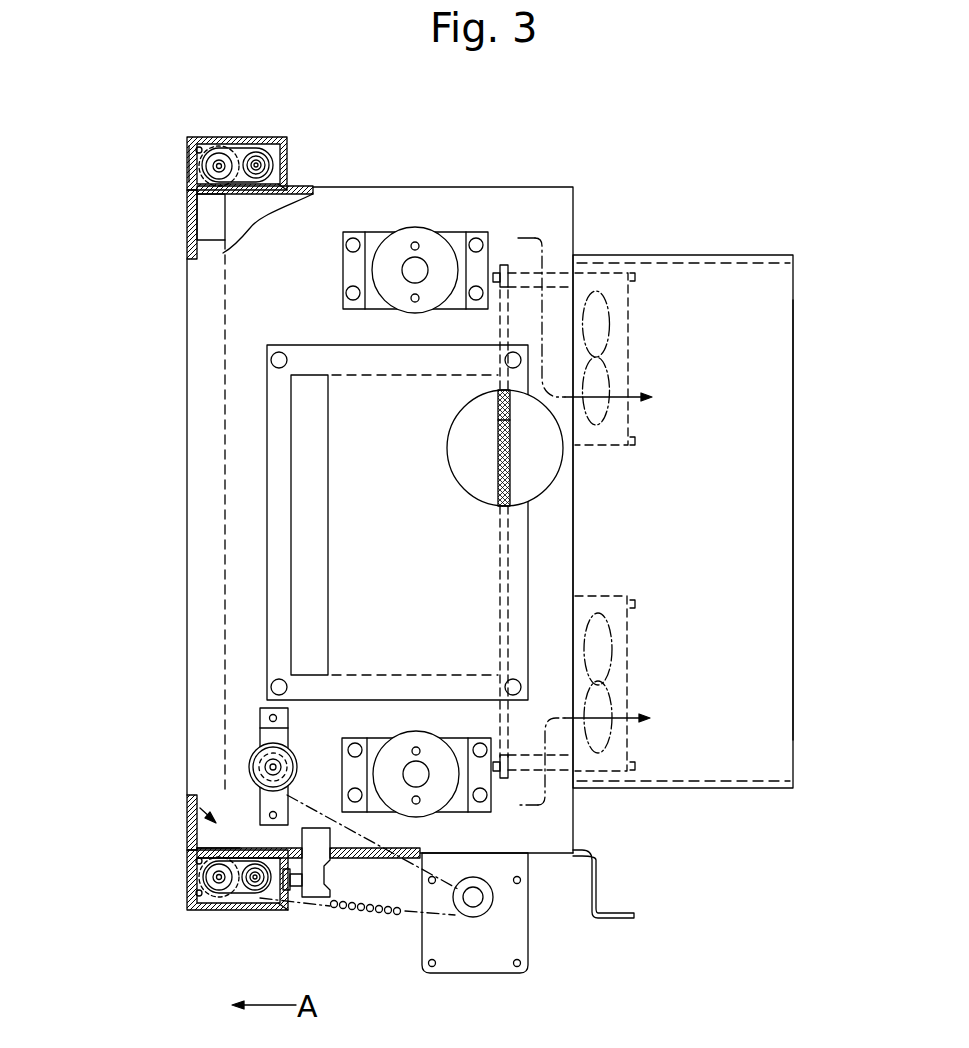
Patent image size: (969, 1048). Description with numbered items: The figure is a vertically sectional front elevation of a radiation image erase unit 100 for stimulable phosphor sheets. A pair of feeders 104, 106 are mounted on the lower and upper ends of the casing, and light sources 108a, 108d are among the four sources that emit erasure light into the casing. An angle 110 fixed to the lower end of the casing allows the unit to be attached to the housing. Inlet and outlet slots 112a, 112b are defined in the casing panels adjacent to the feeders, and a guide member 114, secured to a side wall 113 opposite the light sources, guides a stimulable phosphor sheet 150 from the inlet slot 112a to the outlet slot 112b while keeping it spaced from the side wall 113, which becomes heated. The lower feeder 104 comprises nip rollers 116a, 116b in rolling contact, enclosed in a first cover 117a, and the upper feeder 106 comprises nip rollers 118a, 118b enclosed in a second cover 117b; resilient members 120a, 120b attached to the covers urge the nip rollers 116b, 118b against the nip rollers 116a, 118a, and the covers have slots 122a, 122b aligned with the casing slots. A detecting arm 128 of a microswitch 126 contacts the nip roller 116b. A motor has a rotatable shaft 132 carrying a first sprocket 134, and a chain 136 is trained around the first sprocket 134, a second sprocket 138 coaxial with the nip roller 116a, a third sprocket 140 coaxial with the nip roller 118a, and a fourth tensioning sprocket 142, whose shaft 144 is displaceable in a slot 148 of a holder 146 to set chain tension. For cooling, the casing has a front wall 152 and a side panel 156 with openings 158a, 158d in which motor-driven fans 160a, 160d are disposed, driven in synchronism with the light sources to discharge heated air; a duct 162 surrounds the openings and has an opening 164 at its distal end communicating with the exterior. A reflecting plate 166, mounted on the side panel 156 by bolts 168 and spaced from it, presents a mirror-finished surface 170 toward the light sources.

The radiation image erase unit 100 is at (575, 430).
The feeder 104 is at (182, 892).
The feeder 106 is at (262, 138).
The light source 108a is at (445, 232).
The light source 108d is at (442, 820).
The angle 110 is at (617, 916).
The inlet slot 112a is at (235, 847).
The outlet slot 112b is at (228, 203).
The side wall 113 is at (187, 240).
The guide member 114 is at (410, 848).
The nip roller 116a is at (213, 912).
The nip roller 116b is at (272, 895).
The first cover 117a is at (288, 905).
The second cover 117b is at (287, 190).
The nip roller 118a is at (215, 137).
The nip roller 118b is at (270, 165).
The resilient member 120a is at (190, 878).
The resilient member 120b is at (190, 148).
The slot 122a is at (237, 910).
The slot 122b is at (238, 137).
The microswitch 126 is at (313, 885).
The detecting arm 128 is at (288, 898).
The rotatable shaft 132 is at (478, 898).
The first sprocket 134 is at (517, 925).
The chain 136 is at (395, 917).
The second sprocket 138 is at (190, 912).
The third sprocket 140 is at (190, 166).
The fourth tensioning sprocket 142 is at (258, 771).
The shaft 144 is at (249, 760).
The holder 146 is at (290, 715).
The slot 148 is at (289, 745).
The stimulable phosphor sheet 150 is at (207, 456).
The front wall 152 is at (302, 605).
The side panel 156 is at (575, 548).
The opening 158a is at (560, 412).
The opening 158d is at (650, 716).
The motor-driven fan 160a is at (657, 399).
The motor-driven fan 160d is at (612, 632).
The duct 162 is at (697, 256).
The opening 164 is at (793, 510).
The reflecting plate 166 is at (508, 463).
The bolts 168 is at (545, 278).
The surface 170 is at (500, 445).